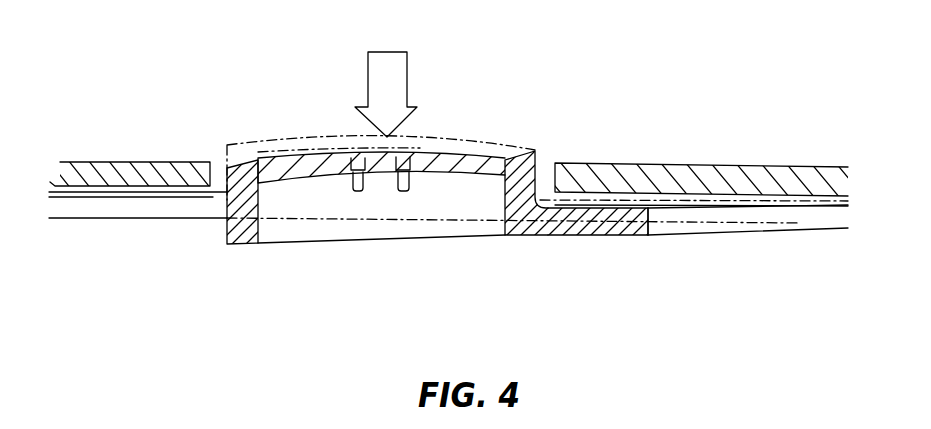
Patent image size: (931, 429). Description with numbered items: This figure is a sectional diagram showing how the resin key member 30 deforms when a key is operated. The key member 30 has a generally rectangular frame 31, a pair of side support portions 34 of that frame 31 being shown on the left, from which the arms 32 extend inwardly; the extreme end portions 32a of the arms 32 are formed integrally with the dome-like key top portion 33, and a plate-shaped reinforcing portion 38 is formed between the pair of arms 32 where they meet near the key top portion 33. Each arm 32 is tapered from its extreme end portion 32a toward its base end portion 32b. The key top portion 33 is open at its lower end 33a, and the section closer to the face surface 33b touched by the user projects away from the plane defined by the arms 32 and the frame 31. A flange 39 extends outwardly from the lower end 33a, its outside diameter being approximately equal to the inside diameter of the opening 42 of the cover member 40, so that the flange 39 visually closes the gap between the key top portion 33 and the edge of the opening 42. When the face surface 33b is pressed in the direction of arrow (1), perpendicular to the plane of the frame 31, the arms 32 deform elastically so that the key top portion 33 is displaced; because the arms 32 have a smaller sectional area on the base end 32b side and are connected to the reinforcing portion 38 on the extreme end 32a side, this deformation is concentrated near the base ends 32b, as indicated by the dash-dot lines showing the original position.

The arrow 1 is at (386, 74).
The key member 30 is at (841, 233).
The frame 31 is at (138, 205).
The arms 32 is at (684, 236).
The extreme end portion 32a is at (630, 236).
The base end portion 32b is at (797, 232).
The key top portion 33 is at (483, 203).
The lower end 33a is at (253, 245).
The face surface 33b is at (460, 137).
The side support portion 34 is at (105, 218).
The reinforcing portion 38 is at (562, 236).
The flange 39 is at (222, 243).
The cover member 40 is at (765, 170).
The opening 42 is at (550, 167).